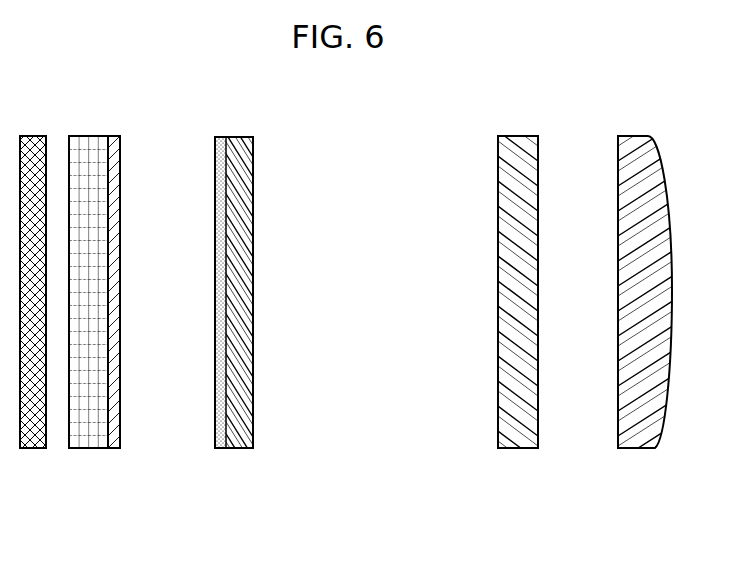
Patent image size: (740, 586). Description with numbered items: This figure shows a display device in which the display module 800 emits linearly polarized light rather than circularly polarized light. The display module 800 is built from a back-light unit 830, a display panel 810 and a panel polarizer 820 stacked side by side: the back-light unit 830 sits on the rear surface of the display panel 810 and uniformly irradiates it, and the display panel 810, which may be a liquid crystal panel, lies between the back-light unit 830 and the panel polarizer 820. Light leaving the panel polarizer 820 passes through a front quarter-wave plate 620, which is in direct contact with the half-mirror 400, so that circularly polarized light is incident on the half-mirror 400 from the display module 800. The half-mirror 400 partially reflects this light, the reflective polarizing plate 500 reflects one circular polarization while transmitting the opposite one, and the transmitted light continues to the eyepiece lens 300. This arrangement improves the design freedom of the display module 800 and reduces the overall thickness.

The eyepiece lens 300 is at (633, 449).
The half-mirror 400 is at (230, 290).
The reflective polarizing plate 500 is at (513, 449).
The front quarter-wave plate 620 is at (224, 136).
The display module 800 is at (70, 337).
The display panel 810 is at (74, 449).
The panel polarizer 820 is at (113, 314).
The back-light unit 830 is at (32, 449).